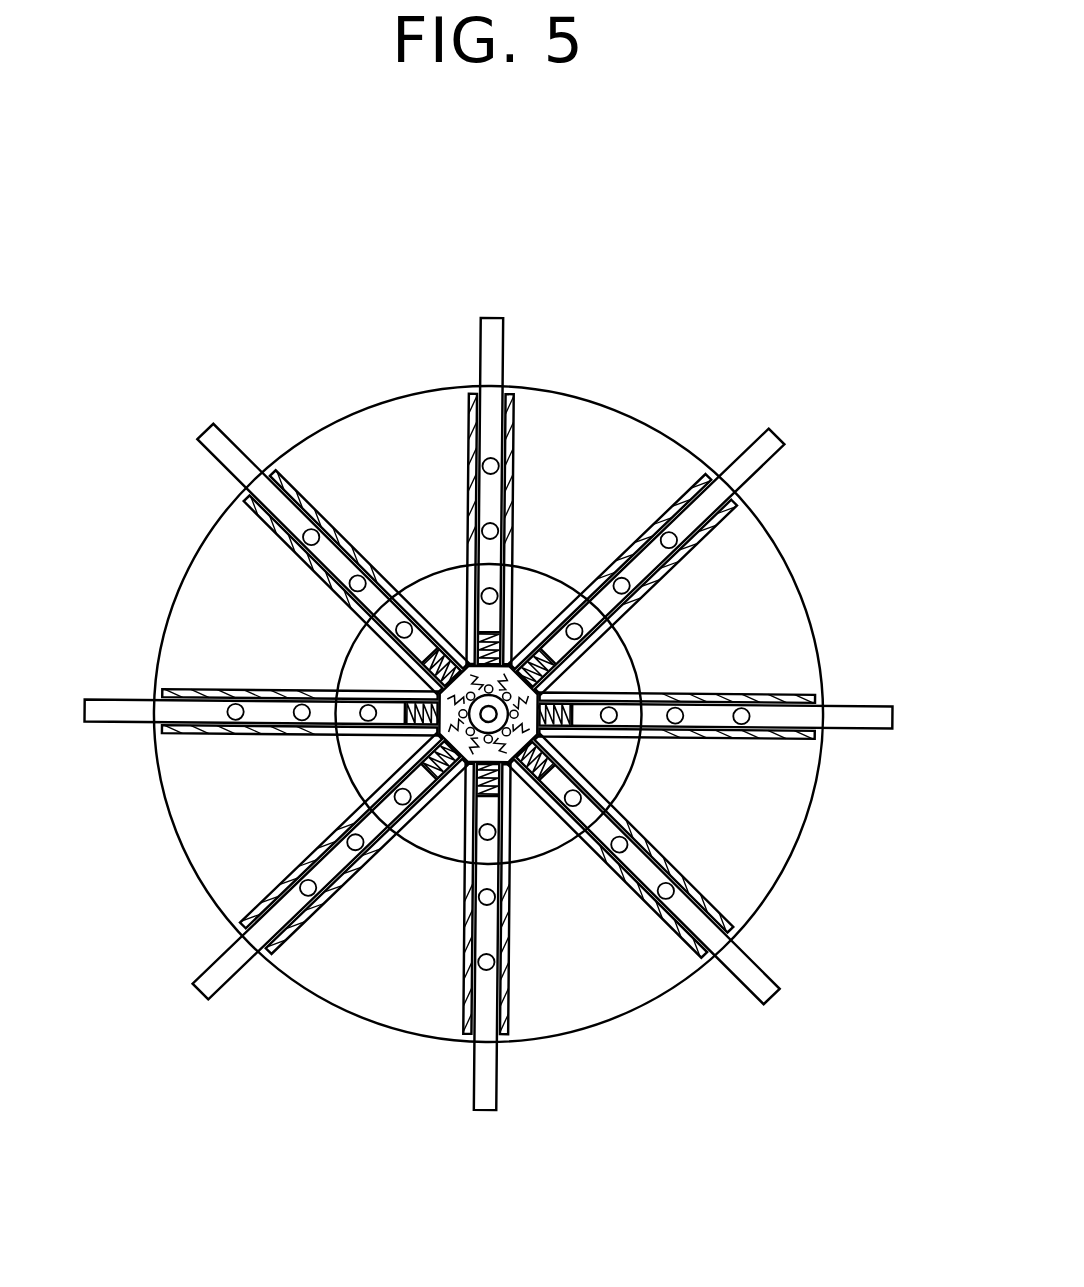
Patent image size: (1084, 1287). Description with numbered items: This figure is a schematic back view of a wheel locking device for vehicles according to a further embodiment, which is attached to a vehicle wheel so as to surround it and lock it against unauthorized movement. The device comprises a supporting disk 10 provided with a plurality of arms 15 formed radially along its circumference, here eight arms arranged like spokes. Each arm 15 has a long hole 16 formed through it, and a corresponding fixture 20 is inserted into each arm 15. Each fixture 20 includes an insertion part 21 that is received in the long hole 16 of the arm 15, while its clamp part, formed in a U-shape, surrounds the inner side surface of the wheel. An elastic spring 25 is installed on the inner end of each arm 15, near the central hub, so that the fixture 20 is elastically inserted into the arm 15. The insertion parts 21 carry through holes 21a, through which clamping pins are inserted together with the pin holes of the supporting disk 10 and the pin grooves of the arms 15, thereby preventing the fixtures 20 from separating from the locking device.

The supporting disk 10 is at (176, 822).
The arm 15 is at (634, 900).
The long hole 16 is at (705, 520).
The fixture 20 is at (498, 753).
The insertion part 21 is at (810, 718).
The through hole 21a is at (232, 706).
The elastic spring 25 is at (563, 747).